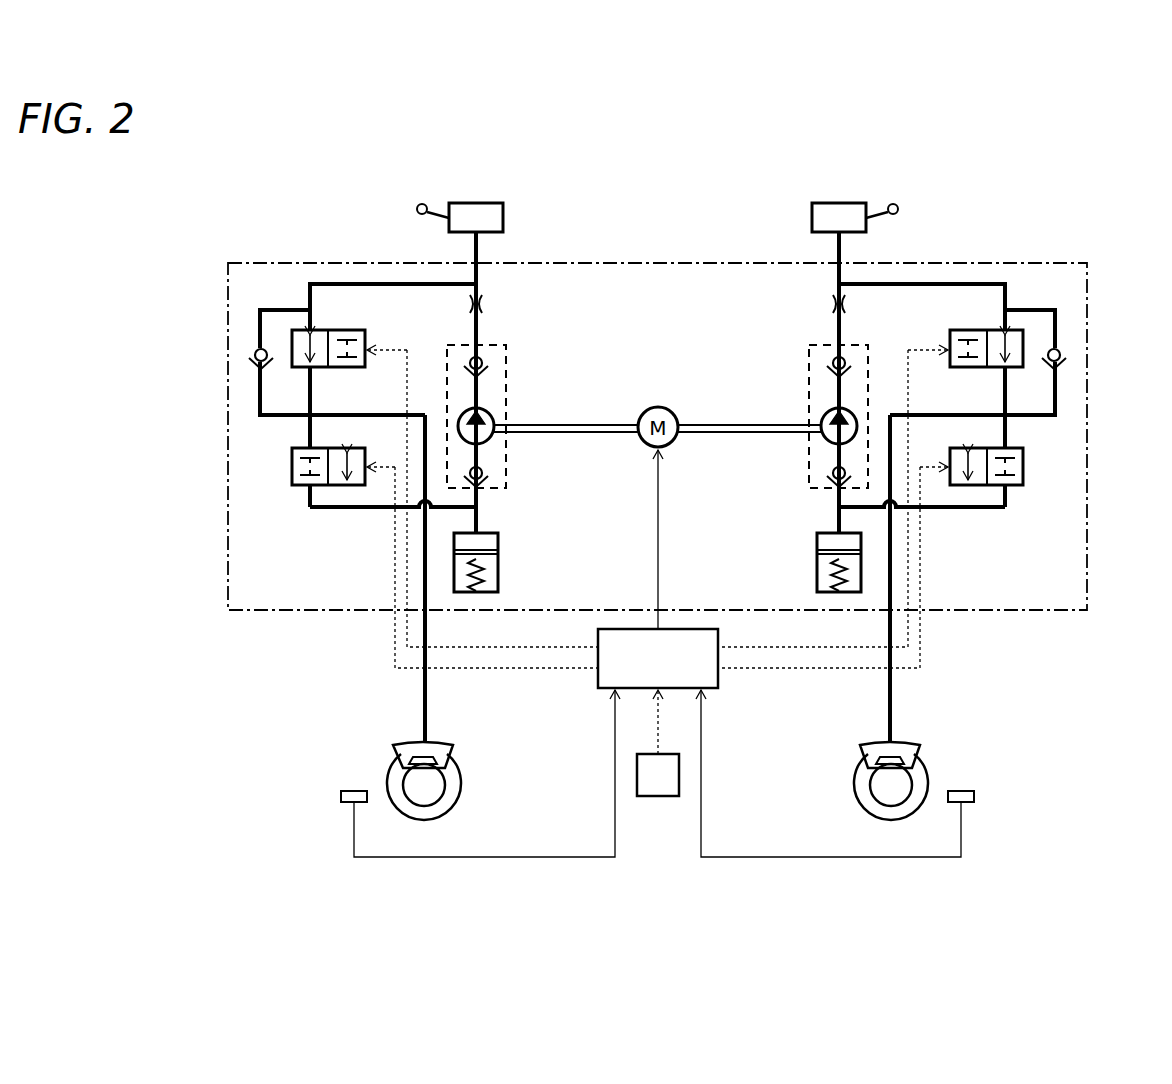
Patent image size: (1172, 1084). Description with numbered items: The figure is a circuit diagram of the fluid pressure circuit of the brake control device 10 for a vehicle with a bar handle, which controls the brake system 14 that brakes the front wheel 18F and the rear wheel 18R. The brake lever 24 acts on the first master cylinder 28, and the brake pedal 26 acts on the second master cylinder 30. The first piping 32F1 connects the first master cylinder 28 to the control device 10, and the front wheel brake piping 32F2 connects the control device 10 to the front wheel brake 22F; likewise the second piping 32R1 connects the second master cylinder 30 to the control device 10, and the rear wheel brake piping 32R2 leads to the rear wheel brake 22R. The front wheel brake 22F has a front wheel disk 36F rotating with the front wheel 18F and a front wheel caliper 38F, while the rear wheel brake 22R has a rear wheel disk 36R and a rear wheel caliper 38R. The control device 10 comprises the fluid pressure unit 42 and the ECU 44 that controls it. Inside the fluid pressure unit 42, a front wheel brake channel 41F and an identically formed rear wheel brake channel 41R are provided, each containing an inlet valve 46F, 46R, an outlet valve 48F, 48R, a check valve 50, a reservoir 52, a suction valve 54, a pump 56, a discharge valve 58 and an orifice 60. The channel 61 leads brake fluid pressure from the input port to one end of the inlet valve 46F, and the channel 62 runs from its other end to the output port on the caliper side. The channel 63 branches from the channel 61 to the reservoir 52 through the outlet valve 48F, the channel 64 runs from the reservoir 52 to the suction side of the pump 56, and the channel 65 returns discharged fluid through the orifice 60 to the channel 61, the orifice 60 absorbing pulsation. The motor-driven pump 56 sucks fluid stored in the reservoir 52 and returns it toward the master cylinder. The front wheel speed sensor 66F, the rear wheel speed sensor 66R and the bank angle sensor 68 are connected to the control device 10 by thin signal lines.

The brake control device 10 is at (288, 652).
The brake system 14 is at (633, 185).
The rear wheel 18R is at (463, 786).
The front wheel 18F is at (854, 786).
The rear wheel brake 22R is at (400, 826).
The front wheel brake 22F is at (920, 826).
The brake lever 24 is at (880, 210).
The brake pedal 26 is at (438, 214).
The first master cylinder 28 is at (839, 203).
The second master cylinder 30 is at (476, 203).
The second piping 32R1 is at (478, 250).
The first piping 32F1 is at (837, 250).
The rear wheel brake piping 32R2 is at (427, 708).
The front wheel brake piping 32F2 is at (888, 705).
The rear wheel disk 36R is at (440, 803).
The front wheel disk 36F is at (875, 803).
The rear wheel caliper 38R is at (403, 745).
The front wheel caliper 38F is at (915, 745).
The rear wheel brake channel 41R is at (287, 296).
The front wheel brake channel 41F is at (1028, 296).
The fluid pressure unit 42 is at (1088, 423).
The ECU 44 is at (718, 678).
The inlet valve 46R is at (352, 331).
The inlet valve 46F is at (963, 331).
The outlet valve 48R is at (290, 463).
The outlet valve 48F is at (1025, 463).
The check valve 50 is at (255, 351).
The reservoir 52 is at (500, 546).
The suction valve 54 is at (483, 471).
The pump 56 is at (485, 413).
The discharge valve 58 is at (483, 360).
The orifice 60 is at (489, 305).
The channel 61 is at (384, 283).
The channel 62 is at (423, 593).
The channel 63 is at (342, 508).
The channel 64 is at (478, 499).
The channel 65 is at (478, 331).
The rear wheel speed sensor 66R is at (340, 796).
The front wheel speed sensor 66F is at (976, 796).
The bank angle sensor 68 is at (658, 797).